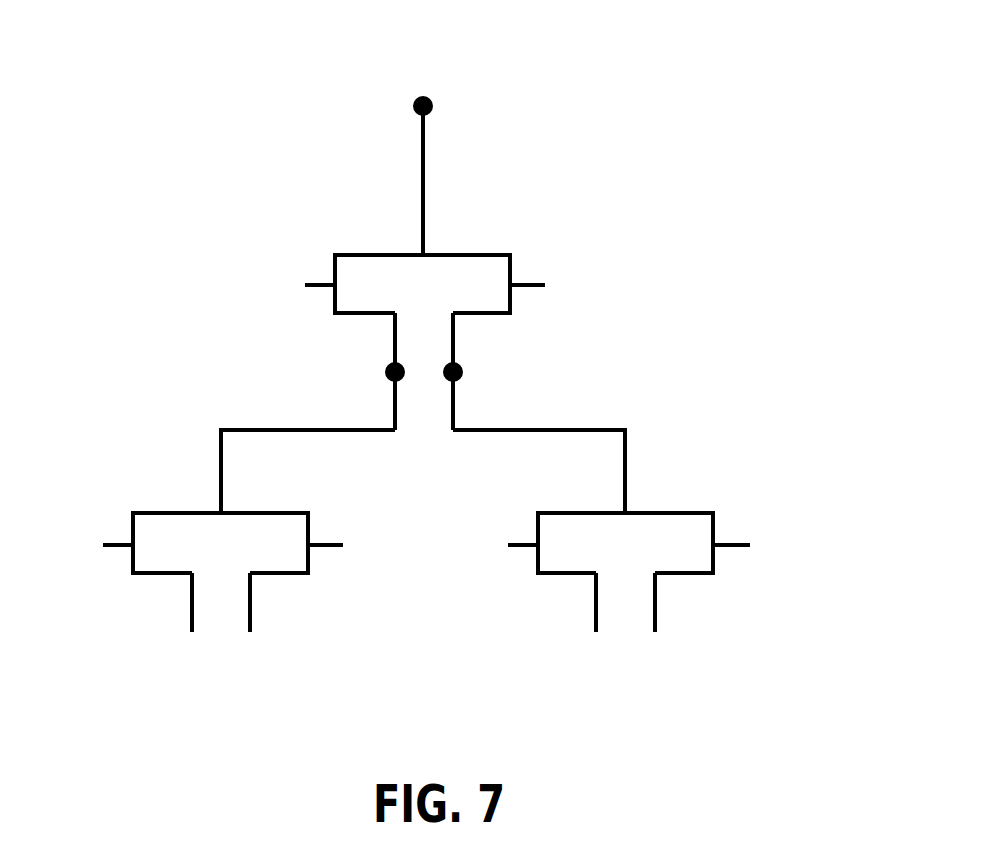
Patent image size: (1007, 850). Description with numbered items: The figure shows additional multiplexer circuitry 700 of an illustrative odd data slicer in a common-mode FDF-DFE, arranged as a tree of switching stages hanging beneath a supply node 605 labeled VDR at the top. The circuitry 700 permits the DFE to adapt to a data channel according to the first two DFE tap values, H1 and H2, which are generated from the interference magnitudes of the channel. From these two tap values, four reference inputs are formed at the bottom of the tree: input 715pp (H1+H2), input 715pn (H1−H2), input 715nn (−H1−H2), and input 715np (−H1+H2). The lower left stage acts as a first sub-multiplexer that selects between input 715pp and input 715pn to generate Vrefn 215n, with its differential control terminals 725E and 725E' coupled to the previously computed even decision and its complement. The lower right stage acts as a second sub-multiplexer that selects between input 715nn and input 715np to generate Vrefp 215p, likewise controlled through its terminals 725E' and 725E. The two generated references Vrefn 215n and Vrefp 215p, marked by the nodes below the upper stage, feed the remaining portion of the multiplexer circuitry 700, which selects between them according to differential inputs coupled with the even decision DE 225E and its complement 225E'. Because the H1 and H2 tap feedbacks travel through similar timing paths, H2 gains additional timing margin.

The VDR supply node 605 is at (432, 80).
The additional multiplexer circuitry 700 is at (627, 151).
The even decision DE 225E is at (291, 286).
The complement of even decision DE 225E' is at (562, 286).
The Vrefn 215n is at (377, 382).
The Vrefp 215p is at (535, 382).
The lower transistor gate terminal 725E is at (428, 546).
The lower transistor complementary gate terminal 725E' is at (423, 546).
The input (H1+H2) 715pp is at (210, 656).
The input (H1−H2) 715pn is at (295, 656).
The input (−H1−H2) 715nn is at (613, 656).
The input (−H1+H2) 715np is at (702, 656).